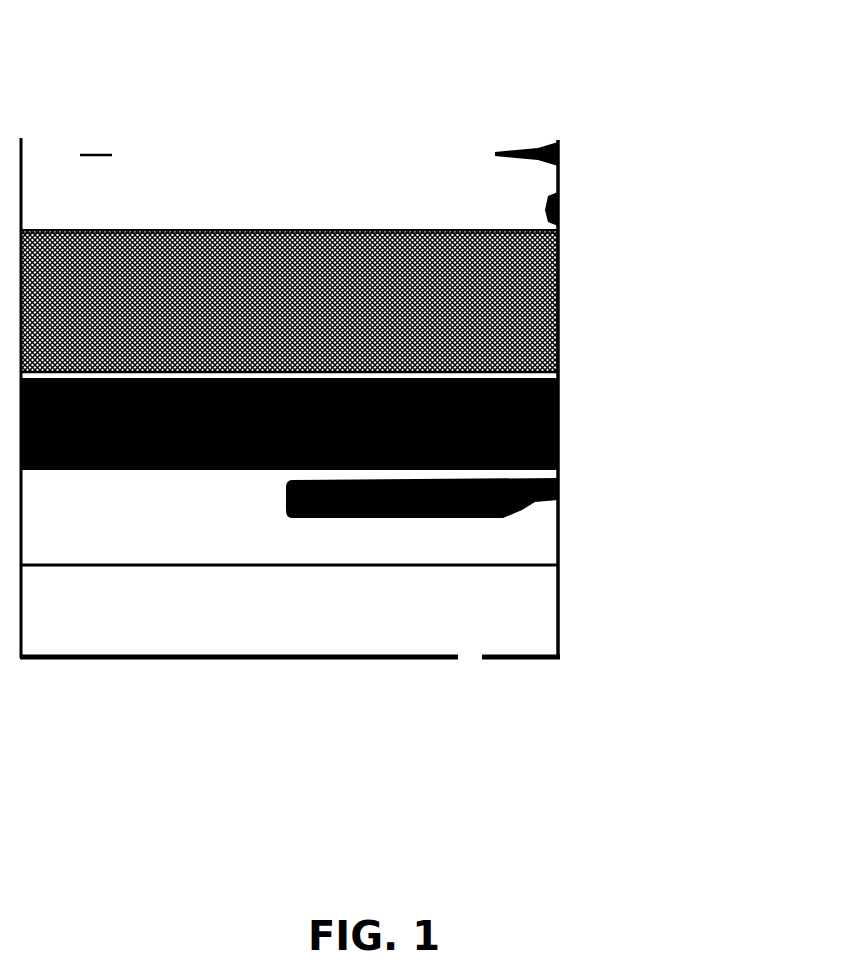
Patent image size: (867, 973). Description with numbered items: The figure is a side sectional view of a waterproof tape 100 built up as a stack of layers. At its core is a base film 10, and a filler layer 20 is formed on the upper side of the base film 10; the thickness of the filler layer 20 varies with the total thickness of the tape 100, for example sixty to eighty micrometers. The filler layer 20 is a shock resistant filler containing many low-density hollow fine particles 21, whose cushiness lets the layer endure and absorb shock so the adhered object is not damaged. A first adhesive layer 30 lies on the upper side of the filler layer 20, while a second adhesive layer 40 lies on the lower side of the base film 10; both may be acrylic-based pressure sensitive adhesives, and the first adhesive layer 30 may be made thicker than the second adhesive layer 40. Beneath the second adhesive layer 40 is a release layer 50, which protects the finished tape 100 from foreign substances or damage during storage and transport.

The waterproof tape 100 is at (104, 85).
The base film 10 is at (560, 423).
The filler layer 20 is at (558, 316).
The hollow fine particles 21 is at (548, 268).
The first adhesive layer 30 is at (545, 186).
The second adhesive layer 40 is at (540, 520).
The release layer 50 is at (423, 617).